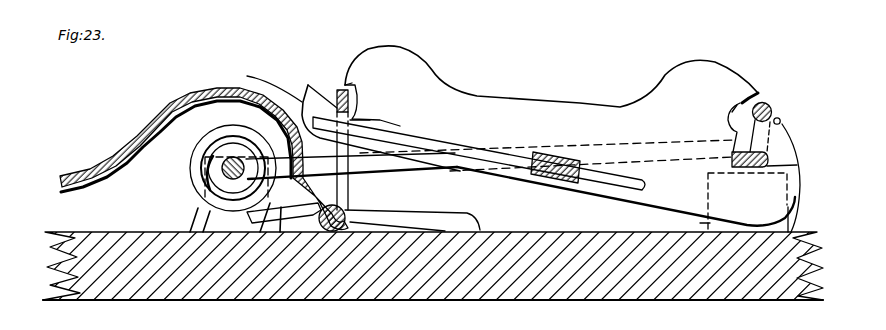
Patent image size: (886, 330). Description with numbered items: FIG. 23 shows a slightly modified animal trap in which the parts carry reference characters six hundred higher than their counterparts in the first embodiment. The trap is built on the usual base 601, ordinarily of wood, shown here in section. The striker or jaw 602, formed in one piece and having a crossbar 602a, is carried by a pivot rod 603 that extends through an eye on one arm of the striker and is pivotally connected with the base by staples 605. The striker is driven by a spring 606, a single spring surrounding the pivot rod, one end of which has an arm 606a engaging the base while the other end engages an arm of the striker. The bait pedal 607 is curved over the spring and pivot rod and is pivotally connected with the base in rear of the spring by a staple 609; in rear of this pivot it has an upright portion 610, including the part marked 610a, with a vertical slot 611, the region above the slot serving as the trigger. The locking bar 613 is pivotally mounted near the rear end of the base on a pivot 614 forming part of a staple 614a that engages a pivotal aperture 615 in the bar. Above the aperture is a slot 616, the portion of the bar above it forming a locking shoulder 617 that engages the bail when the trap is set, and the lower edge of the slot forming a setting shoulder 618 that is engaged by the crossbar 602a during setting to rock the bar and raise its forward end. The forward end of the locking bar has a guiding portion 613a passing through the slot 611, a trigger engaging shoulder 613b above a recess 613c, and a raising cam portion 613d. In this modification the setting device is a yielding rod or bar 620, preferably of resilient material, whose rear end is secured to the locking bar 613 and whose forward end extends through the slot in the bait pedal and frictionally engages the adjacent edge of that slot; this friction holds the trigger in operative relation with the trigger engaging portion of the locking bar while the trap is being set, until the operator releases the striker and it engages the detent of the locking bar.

The base 601 is at (451, 292).
The striker 602 is at (447, 170).
The crossbar of the striker 602a is at (764, 103).
The pivot rod 603 is at (220, 166).
The staples 605 is at (197, 207).
The spring 606 is at (207, 140).
The arm of the spring 606a is at (472, 226).
The bait pedal 607 is at (140, 128).
The staple 609 is at (325, 232).
The upright portion of the bait pedal 610 is at (337, 214).
The lever head 610a is at (337, 88).
The vertical slot 611 is at (350, 190).
The locking bar 613 is at (522, 102).
The guiding portion 613a is at (254, 77).
The trigger engaging shoulder 613b is at (346, 80).
The recess 613c is at (370, 120).
The raising cam portion 613d is at (310, 104).
The pivot 614 is at (757, 156).
The staple 614a is at (685, 221).
The pivotal aperture 615 is at (800, 178).
The slot 616 is at (735, 117).
The locking shoulder 617 is at (753, 92).
The setting shoulder 618 is at (778, 118).
The slide bar 620 is at (440, 145).